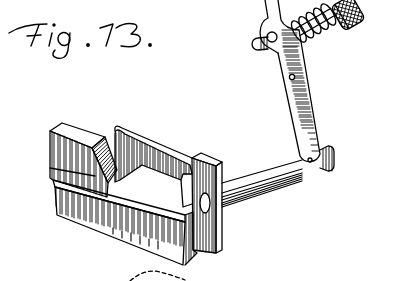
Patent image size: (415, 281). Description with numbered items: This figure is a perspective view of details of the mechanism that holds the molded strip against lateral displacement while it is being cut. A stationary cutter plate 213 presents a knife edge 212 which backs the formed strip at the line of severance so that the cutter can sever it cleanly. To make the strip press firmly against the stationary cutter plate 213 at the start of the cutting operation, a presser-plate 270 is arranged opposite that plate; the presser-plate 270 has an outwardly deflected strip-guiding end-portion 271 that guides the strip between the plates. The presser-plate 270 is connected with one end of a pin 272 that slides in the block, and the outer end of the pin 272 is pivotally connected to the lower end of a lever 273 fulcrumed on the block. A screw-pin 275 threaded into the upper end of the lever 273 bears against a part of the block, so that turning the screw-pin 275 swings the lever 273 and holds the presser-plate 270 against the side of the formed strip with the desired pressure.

The presser-plate 270 is at (196, 154).
The strip-guiding end-portion 271 is at (118, 121).
The pin 272 is at (262, 188).
The lever 273 is at (305, 104).
The screw-pin 275 is at (256, 44).
The stationary cutter plate 213 is at (148, 240).
The knife edge 212 is at (218, 249).